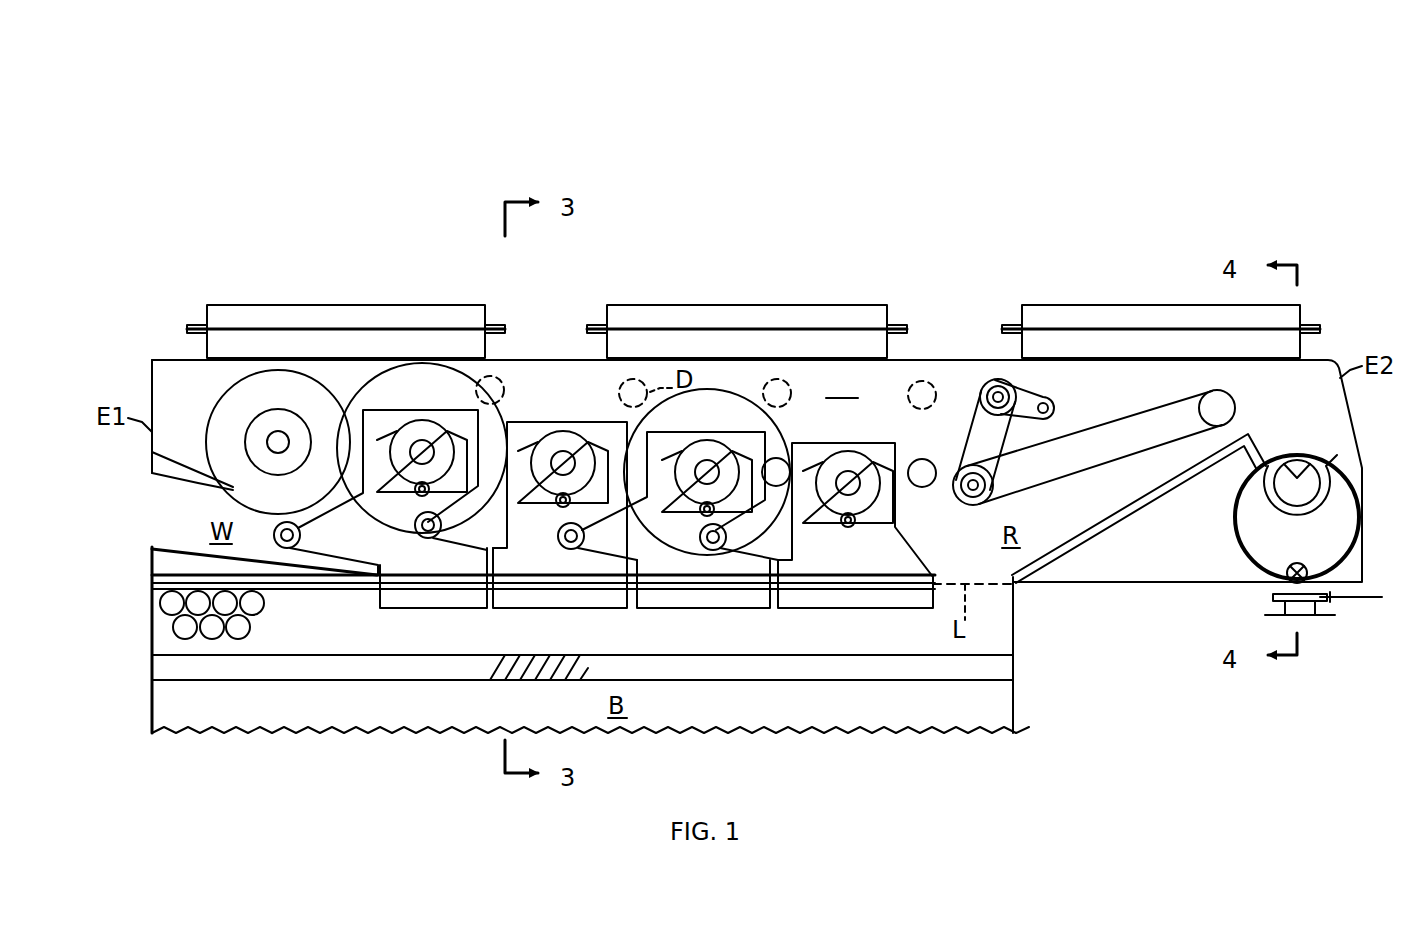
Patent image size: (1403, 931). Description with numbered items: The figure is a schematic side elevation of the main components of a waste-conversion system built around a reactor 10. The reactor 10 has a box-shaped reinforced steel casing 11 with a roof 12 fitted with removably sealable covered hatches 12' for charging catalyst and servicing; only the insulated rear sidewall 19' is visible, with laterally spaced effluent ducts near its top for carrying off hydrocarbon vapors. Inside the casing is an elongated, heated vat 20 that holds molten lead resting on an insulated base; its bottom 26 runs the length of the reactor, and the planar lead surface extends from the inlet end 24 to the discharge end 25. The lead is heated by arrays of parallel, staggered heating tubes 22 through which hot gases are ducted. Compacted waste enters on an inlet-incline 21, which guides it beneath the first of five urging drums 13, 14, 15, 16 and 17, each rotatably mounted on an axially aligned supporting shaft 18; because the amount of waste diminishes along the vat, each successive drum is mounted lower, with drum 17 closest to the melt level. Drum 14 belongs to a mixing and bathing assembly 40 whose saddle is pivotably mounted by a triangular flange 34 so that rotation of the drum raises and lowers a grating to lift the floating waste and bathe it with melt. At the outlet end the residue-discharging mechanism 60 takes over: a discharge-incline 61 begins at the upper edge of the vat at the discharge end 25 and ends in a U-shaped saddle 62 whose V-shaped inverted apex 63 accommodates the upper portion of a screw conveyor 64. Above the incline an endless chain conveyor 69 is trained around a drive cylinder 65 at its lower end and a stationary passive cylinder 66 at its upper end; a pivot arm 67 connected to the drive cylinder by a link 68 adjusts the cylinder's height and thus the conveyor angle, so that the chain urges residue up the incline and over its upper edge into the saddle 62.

The reactor 10 is at (610, 213).
The reinforced steel casing 11 is at (564, 647).
The roof 12 is at (757, 445).
The covered hatches 12' is at (753, 307).
The urging drum 13 is at (231, 432).
The urging drum 14 is at (508, 352).
The urging drum 15 is at (560, 443).
The urging drum 16 is at (686, 415).
The urging drum 17 is at (857, 450).
The supporting shaft 18 is at (543, 528).
The rear sidewall 19' is at (844, 386).
The vat 20 is at (112, 656).
The inlet-incline 21 is at (543, 546).
The heating tubes 22 is at (231, 654).
The inlet end 24 is at (234, 559).
The discharge end 25 is at (1043, 655).
The bottom of the vat 26 is at (582, 644).
The triangular flange 34 is at (580, 560).
The mixing and bathing assembly 40 is at (398, 422).
The residue-discharging mechanism 60 is at (1146, 442).
The discharge-incline 61 is at (1139, 508).
The U-shaped saddle 62 is at (1291, 458).
The inverted apex 63 is at (1303, 464).
The screw conveyor 64 is at (1308, 535).
The drive cylinder 65 is at (964, 510).
The passive cylinder 66 is at (1247, 399).
The pivot arm 67 is at (1036, 395).
The link 68 is at (962, 441).
The endless chain conveyor 69 is at (1094, 435).